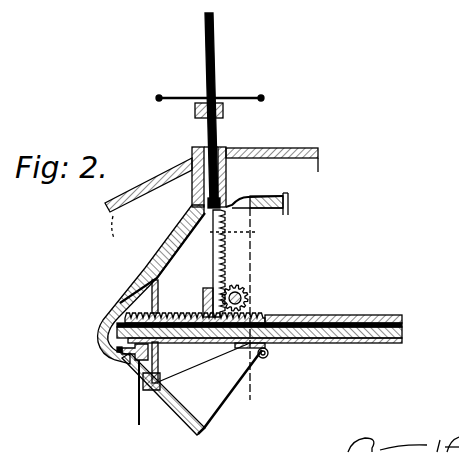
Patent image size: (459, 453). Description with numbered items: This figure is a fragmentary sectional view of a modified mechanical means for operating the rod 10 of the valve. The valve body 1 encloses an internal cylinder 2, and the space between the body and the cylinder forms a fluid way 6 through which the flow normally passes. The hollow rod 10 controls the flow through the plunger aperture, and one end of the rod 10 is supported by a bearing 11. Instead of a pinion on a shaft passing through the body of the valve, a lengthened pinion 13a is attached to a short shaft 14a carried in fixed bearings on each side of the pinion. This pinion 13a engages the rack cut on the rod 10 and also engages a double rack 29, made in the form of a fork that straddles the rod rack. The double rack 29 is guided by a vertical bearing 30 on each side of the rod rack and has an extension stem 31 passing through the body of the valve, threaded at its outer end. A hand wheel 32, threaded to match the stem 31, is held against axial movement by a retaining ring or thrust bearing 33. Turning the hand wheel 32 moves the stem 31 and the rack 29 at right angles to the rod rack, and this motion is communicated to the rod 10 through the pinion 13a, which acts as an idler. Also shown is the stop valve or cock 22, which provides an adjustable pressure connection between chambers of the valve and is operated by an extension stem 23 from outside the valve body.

The body 1 is at (290, 149).
The internal cylinder 2 is at (280, 195).
The fluid way 6 is at (270, 172).
The rod 10 is at (343, 316).
The bearing 11 is at (192, 389).
The pinion 13a is at (246, 302).
The short shaft 14a is at (240, 296).
The stop valve or cock 22 is at (138, 355).
The extension stem 23 is at (137, 410).
The double rack 29 is at (246, 263).
The vertical bearing 30 is at (204, 300).
The extension stem 31 is at (204, 136).
The hand wheel 32 is at (172, 97).
The retaining ring or thrust bearing 33 is at (223, 110).